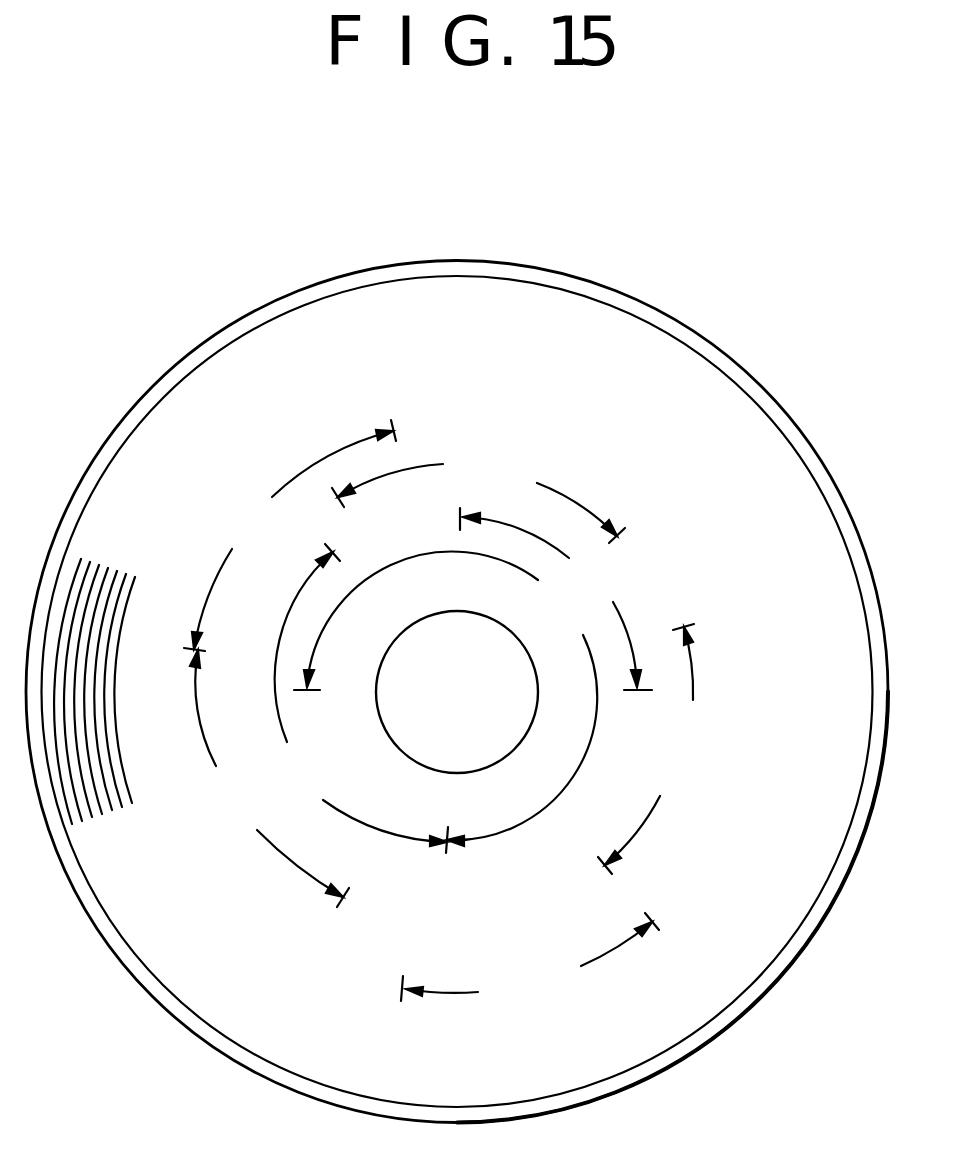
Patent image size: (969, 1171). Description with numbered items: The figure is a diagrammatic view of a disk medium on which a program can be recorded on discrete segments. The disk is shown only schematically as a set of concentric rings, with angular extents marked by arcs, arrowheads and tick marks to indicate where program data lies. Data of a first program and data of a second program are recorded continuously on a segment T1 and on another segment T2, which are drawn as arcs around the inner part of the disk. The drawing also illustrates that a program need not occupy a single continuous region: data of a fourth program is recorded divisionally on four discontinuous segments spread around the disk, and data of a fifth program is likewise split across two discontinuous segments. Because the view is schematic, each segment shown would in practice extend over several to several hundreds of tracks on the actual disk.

The segment T1 is at (460, 721).
The segment T2 is at (406, 667).